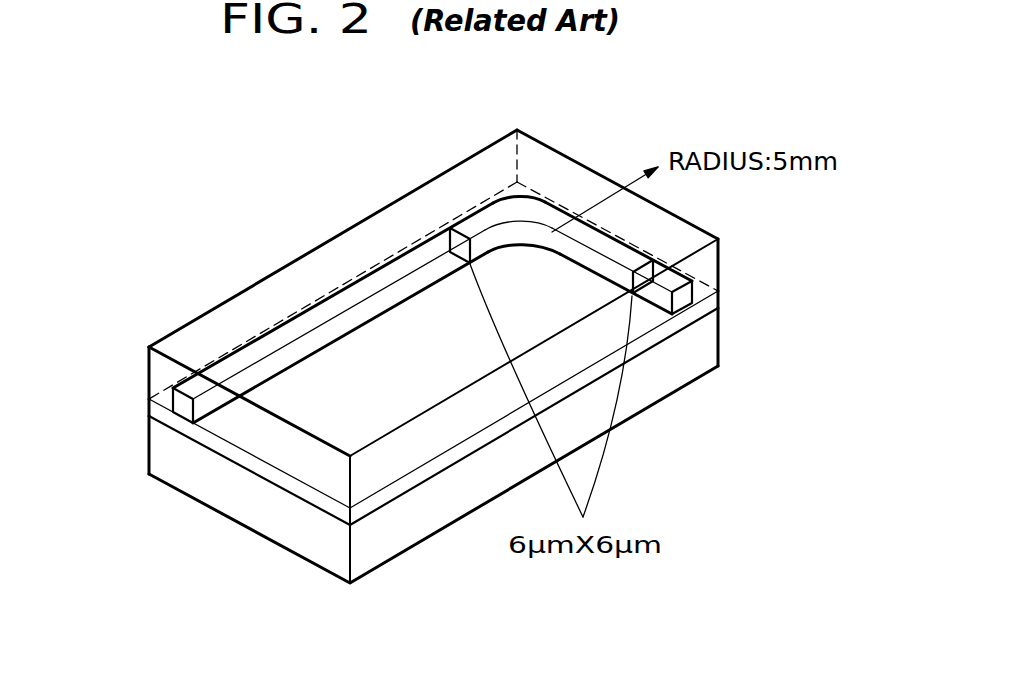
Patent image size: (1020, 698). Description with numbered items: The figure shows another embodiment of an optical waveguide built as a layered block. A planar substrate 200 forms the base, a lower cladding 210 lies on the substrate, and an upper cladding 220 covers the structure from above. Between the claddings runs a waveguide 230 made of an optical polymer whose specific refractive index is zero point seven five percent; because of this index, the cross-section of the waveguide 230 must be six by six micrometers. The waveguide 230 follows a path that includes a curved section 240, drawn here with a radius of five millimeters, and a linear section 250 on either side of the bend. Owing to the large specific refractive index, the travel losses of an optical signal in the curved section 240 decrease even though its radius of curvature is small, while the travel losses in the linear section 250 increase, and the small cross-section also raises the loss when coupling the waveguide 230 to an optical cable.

The planar substrate 200 is at (284, 535).
The lower cladding 210 is at (158, 407).
The upper cladding 220 is at (390, 217).
The waveguide 230 is at (323, 303).
The curved section 240 is at (627, 294).
The linear section 250 is at (342, 353).